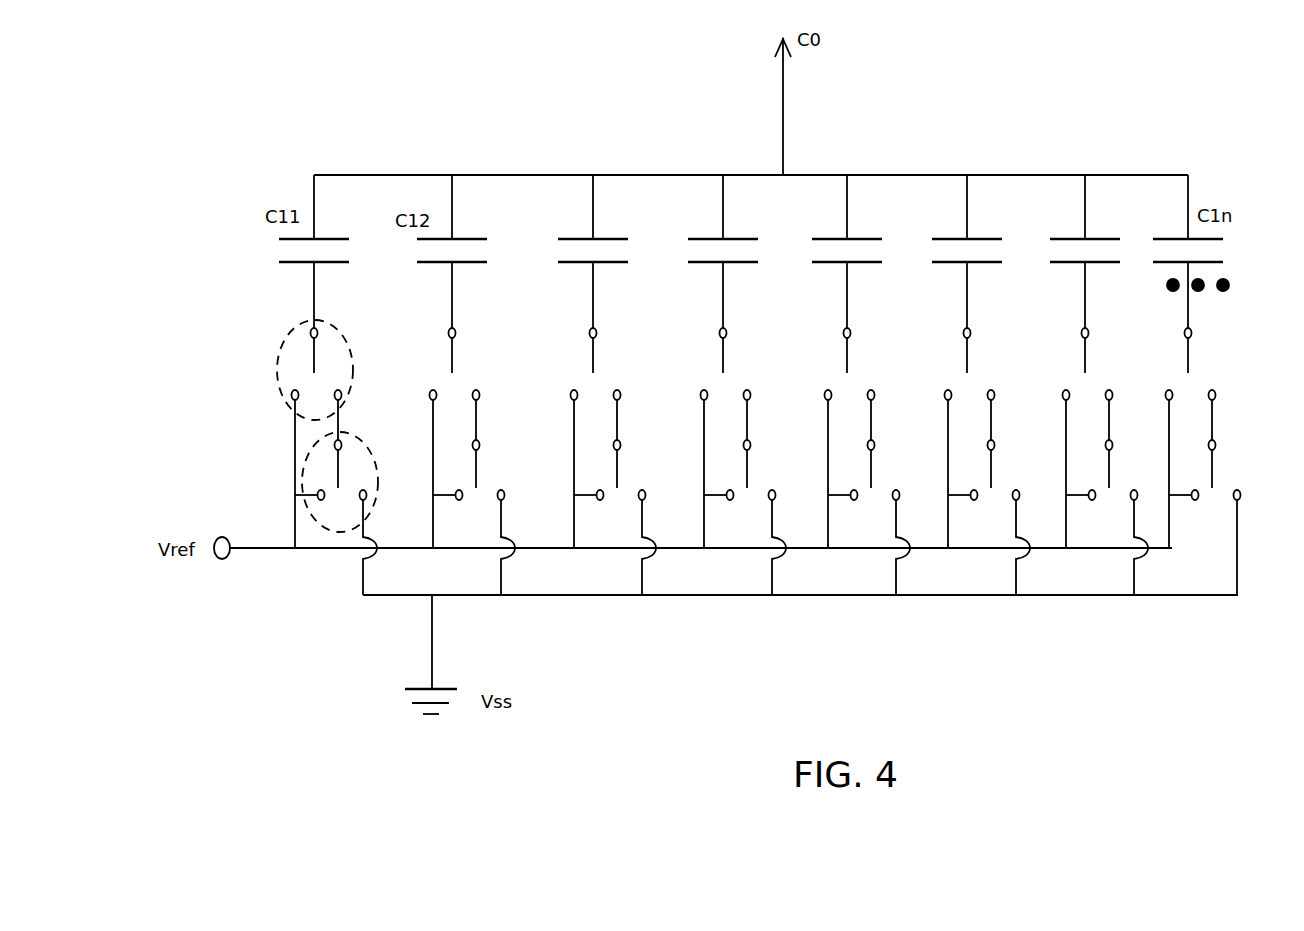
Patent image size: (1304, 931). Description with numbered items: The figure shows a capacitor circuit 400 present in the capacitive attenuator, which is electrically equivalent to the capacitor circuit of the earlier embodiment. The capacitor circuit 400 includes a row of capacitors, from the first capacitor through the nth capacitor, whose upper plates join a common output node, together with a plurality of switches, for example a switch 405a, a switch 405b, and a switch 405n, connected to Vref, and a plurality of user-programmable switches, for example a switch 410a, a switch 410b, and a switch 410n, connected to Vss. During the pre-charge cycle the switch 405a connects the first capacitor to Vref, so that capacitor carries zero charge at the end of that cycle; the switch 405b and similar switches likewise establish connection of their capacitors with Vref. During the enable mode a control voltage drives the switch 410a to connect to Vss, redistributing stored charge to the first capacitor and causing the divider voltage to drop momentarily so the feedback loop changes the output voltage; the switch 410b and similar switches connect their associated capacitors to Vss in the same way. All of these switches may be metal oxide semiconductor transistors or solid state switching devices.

The capacitor circuit 400 is at (414, 673).
The switch 405a is at (279, 360).
The switch 405b is at (452, 357).
The switch 405n is at (1188, 355).
The user-programmable switch 410a is at (379, 465).
The user-programmable switch 410b is at (476, 465).
The user-programmable switch 410n is at (1213, 465).